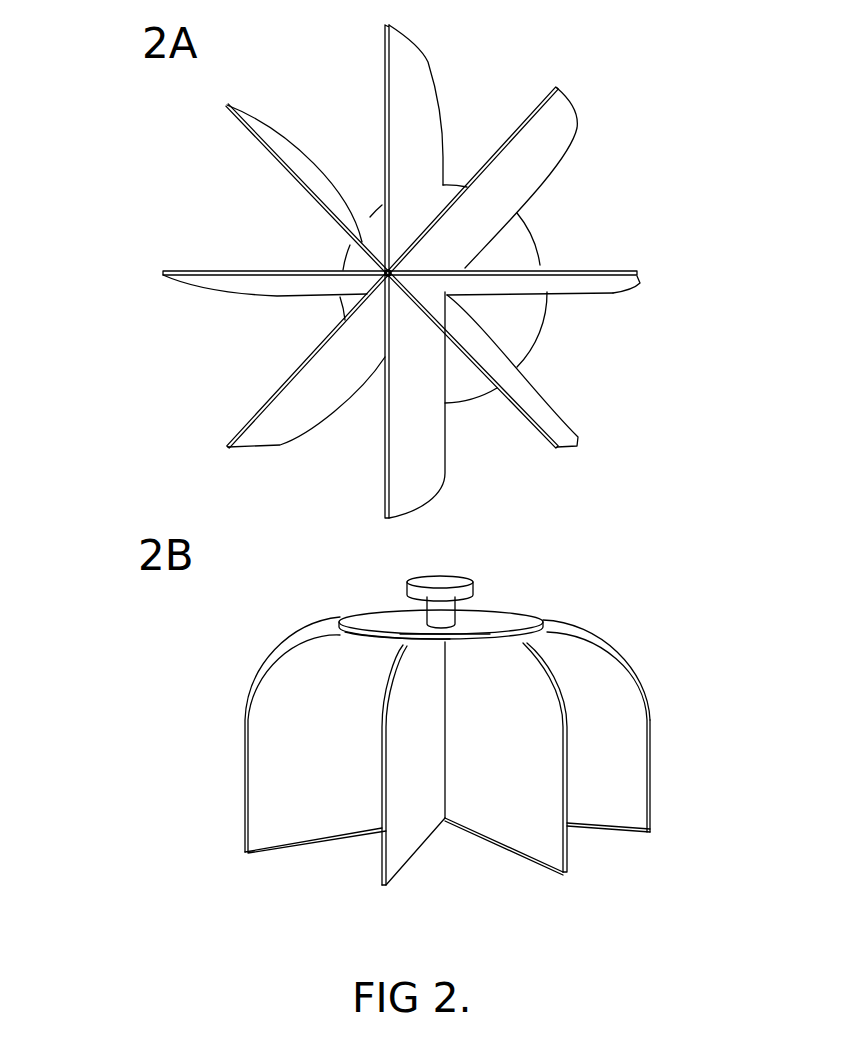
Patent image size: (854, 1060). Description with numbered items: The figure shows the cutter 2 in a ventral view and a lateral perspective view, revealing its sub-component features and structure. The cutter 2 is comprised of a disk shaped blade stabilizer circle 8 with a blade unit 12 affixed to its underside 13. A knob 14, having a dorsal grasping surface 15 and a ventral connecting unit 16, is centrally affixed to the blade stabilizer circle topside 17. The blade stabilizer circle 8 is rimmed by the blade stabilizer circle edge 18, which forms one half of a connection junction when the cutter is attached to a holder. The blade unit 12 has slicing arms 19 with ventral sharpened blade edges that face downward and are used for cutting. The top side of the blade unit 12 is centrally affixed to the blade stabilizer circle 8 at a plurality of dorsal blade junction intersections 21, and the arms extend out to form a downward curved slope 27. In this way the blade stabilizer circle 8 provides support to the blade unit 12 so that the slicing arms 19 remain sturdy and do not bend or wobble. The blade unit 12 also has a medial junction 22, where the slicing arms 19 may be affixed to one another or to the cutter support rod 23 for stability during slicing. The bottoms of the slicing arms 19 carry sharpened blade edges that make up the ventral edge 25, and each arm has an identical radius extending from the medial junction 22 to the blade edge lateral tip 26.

The cutter 2 is at (173, 195).
The blade stabilizer circle 8 is at (530, 212).
The blade unit 12 is at (227, 450).
The underside 13 is at (515, 248).
The knob 14 is at (467, 581).
The dorsal grasping surface 15 is at (440, 578).
The ventral connecting unit 16 is at (400, 611).
The blade stabilizer circle topside 17 is at (497, 622).
The blade stabilizer circle edge 18 is at (547, 618).
The slicing arms 19 is at (633, 702).
The dorsal blade junction intersections 21 is at (517, 292).
The medial junction 22 is at (445, 820).
The cutter support rod 23 is at (387, 272).
The ventral edge 25 is at (633, 277).
The blade edge lateral tip 26 is at (392, 277).
The downward curved slope 27 is at (613, 645).